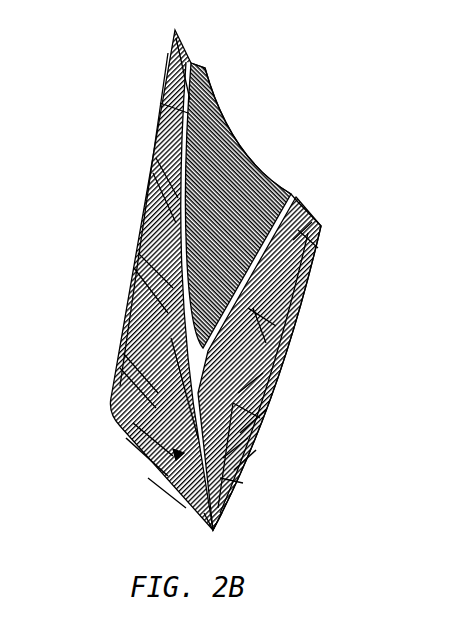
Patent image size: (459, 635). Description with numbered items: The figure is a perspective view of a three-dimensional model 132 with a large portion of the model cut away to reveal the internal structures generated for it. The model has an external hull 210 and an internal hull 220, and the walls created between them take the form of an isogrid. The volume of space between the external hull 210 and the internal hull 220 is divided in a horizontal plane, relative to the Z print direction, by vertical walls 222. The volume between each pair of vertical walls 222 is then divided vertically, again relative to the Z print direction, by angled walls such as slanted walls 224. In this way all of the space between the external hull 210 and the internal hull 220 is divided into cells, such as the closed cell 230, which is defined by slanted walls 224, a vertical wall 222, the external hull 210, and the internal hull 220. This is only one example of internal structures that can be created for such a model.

The 3D model 132 is at (110, 77).
The external hull 210 is at (263, 362).
The internal hull 220 is at (283, 187).
The vertical walls 222 is at (130, 417).
The slanted walls 224 is at (158, 462).
The closed cell 230 is at (203, 520).